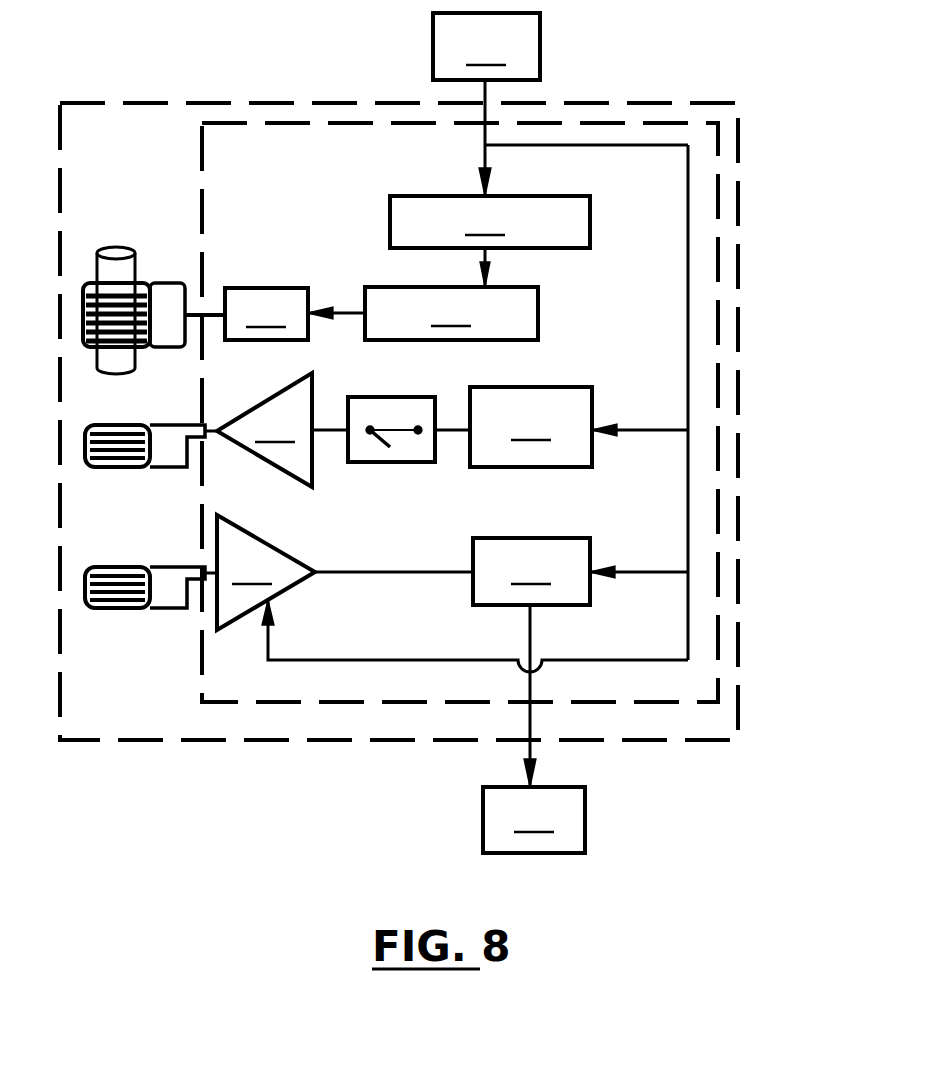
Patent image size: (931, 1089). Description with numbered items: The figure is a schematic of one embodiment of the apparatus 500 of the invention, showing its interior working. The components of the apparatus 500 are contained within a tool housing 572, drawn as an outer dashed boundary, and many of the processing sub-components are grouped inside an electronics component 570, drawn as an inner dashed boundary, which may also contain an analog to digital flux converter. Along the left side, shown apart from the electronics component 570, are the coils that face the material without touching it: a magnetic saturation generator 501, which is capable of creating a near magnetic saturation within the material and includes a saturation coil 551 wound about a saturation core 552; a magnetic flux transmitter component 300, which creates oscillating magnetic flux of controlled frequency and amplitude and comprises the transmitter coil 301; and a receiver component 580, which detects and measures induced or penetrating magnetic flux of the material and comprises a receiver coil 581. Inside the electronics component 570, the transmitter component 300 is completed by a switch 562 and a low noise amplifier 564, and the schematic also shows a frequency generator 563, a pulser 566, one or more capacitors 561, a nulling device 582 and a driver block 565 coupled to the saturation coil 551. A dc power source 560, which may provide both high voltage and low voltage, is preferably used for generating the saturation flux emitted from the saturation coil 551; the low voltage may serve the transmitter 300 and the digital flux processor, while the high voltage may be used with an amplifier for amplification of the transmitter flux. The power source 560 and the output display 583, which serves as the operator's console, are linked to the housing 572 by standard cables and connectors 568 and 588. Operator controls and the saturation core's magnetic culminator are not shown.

The apparatus 500 is at (660, 791).
The magnetic saturation generator 501 is at (180, 265).
The saturation coil 551 is at (152, 280).
The saturation core 552 is at (117, 250).
The magnetic flux transmitter component 300 is at (173, 425).
The transmitter coil 301 is at (143, 480).
The receiver component 580 is at (114, 548).
The receiver coil 581 is at (120, 610).
The power source 560 is at (486, 46).
The capacitors 561 is at (490, 241).
The switch 562 is at (412, 463).
The frequency generator 563 is at (531, 427).
The low noise amplifier 564 is at (345, 501).
The driver 565 is at (246, 314).
The pulser 566 is at (423, 313).
The cables and connectors 568 is at (485, 134).
The electronics component 570 is at (718, 490).
The tool housing 572 is at (738, 585).
The nulling device 582 is at (531, 571).
The output display 583 is at (534, 820).
The cables and connectors 588 is at (528, 718).